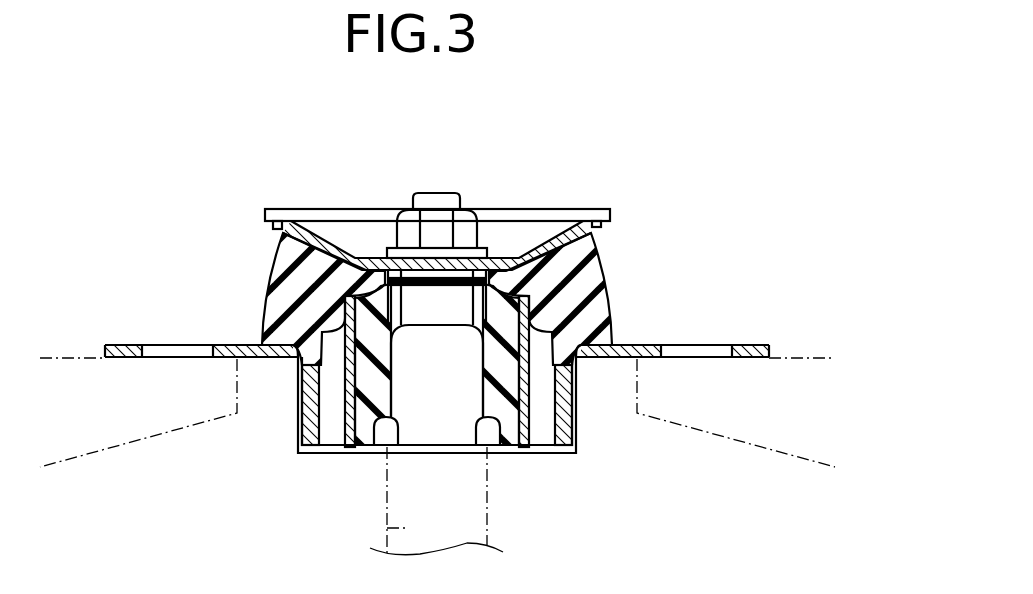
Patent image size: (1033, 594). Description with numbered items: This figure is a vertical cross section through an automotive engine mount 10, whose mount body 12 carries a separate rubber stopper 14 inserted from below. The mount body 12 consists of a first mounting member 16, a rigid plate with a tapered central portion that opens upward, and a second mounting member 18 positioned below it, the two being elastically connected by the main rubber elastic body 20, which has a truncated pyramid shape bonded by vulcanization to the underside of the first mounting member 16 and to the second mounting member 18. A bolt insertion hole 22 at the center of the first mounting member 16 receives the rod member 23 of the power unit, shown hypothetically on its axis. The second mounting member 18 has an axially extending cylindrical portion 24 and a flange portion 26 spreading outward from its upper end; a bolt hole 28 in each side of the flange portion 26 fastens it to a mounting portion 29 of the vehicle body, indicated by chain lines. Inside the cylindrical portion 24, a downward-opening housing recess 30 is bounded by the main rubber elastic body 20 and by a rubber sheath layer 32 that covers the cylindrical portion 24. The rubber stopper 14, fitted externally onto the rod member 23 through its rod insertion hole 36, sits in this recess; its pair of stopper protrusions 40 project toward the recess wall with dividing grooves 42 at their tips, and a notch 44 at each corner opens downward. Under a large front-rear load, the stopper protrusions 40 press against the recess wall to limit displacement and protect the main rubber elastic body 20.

The engine mount 10 is at (657, 188).
The mount body 12 is at (610, 270).
The rubber stopper 14 is at (334, 436).
The first mounting member 16 is at (310, 206).
The second mounting member 18 is at (650, 340).
The main rubber elastic body 20 is at (310, 275).
The bolt insertion hole 22 is at (424, 258).
The rod member 23 is at (377, 535).
The cylindrical portion 24 is at (565, 415).
The flange portion 26 is at (643, 350).
The bolt hole 28 is at (143, 346).
The mounting portion 29 is at (153, 437).
The housing recess 30 is at (544, 416).
The rubber sheath layer 32 is at (305, 405).
The rod insertion hole 36 is at (470, 293).
The stopper protrusions 40 is at (340, 350).
The dividing grooves 42 is at (340, 325).
The notch 44 is at (380, 440).